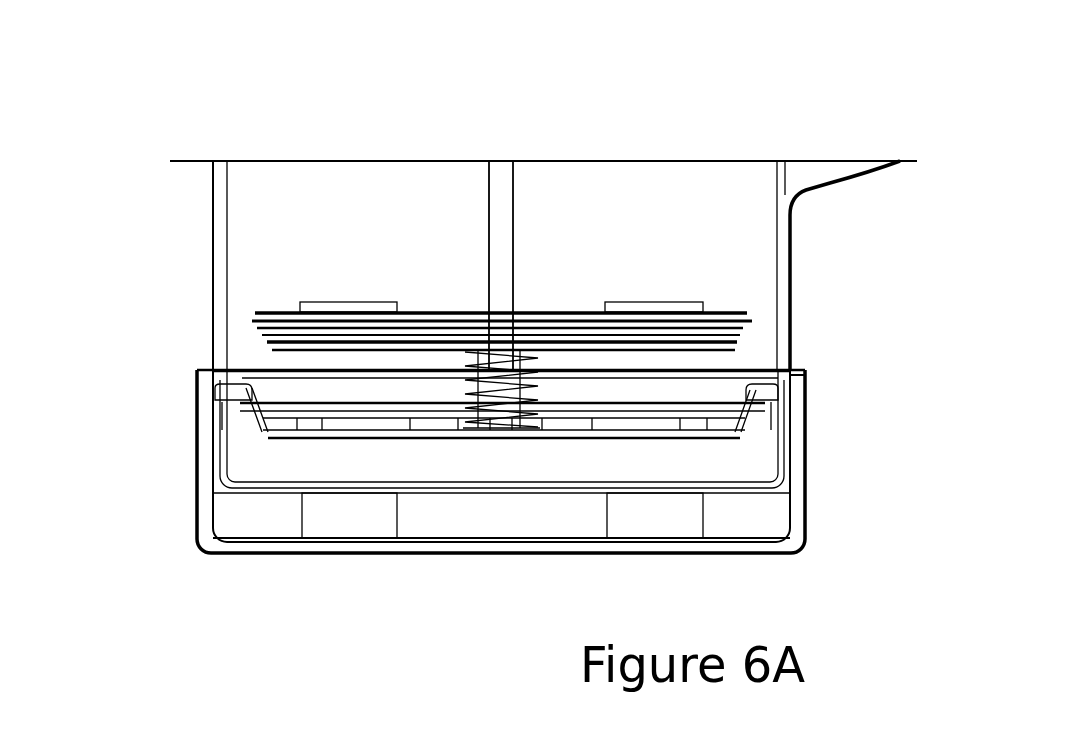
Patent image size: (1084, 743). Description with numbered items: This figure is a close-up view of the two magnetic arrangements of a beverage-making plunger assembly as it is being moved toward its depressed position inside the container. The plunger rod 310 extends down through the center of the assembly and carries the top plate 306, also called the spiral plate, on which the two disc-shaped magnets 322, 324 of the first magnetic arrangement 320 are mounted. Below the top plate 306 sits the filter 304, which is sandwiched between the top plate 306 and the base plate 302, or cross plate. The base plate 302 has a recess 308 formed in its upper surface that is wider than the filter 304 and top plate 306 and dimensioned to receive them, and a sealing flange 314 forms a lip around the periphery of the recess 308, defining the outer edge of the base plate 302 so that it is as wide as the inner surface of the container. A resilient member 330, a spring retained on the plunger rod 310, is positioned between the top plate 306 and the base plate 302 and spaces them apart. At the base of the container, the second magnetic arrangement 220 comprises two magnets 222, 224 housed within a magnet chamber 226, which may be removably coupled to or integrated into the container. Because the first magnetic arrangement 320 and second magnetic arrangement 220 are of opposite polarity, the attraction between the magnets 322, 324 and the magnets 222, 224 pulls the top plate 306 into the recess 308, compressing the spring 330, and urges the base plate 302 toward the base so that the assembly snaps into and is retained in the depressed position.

The second magnetic arrangement 220 is at (416, 553).
The magnet 222 is at (338, 517).
The magnet 224 is at (683, 515).
The magnet chamber 226 is at (817, 488).
The base plate 302 is at (230, 407).
The filter 304 is at (277, 387).
The top plate 306 is at (255, 312).
The recess 308 is at (683, 390).
The plunger rod 310 is at (490, 205).
The sealing flange 314 is at (777, 385).
The first magnetic arrangement 320 is at (571, 268).
The magnet 322 is at (330, 300).
The magnet 324 is at (660, 295).
The resilient member 330 is at (487, 428).